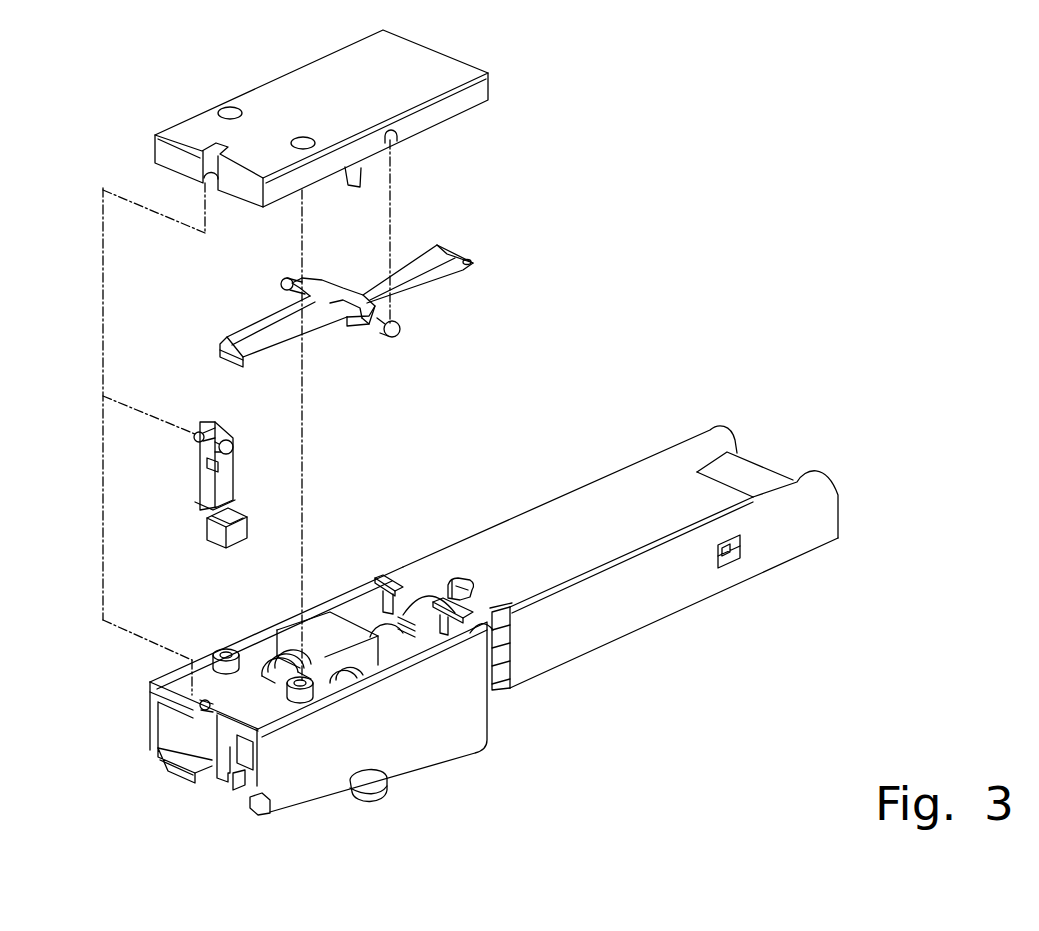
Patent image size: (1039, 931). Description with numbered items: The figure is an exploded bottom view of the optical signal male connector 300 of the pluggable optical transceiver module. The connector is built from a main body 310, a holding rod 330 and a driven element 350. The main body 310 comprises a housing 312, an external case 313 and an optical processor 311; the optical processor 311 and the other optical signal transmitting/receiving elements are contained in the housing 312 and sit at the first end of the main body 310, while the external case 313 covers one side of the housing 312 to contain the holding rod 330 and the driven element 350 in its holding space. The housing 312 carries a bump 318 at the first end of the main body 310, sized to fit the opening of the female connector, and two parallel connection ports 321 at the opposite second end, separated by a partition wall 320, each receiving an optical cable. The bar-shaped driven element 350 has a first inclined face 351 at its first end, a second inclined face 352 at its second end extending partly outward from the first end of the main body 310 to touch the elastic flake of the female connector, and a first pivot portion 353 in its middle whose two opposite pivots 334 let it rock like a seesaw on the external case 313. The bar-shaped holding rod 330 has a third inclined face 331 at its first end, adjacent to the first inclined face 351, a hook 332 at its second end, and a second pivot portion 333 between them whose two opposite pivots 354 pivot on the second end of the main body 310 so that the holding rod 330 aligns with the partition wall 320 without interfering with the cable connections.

The optical signal male connector 300 is at (745, 180).
The main body 310 is at (335, 815).
The optical processor 311 is at (603, 481).
The housing 312 is at (437, 750).
The external case 313 is at (313, 73).
The bump 318 is at (470, 578).
The partition wall 320 is at (220, 777).
The connection ports 321 is at (198, 757).
The holding rod 330 is at (250, 477).
The third inclined face 331 is at (208, 417).
The hook 332 is at (247, 522).
The second pivot portion 333 is at (222, 420).
The pivots 334 is at (398, 333).
The driven element 350 is at (410, 307).
The first inclined face 351 is at (235, 347).
The second inclined face 352 is at (472, 262).
The first pivot portion 353 is at (375, 343).
The pivots 354 is at (234, 440).